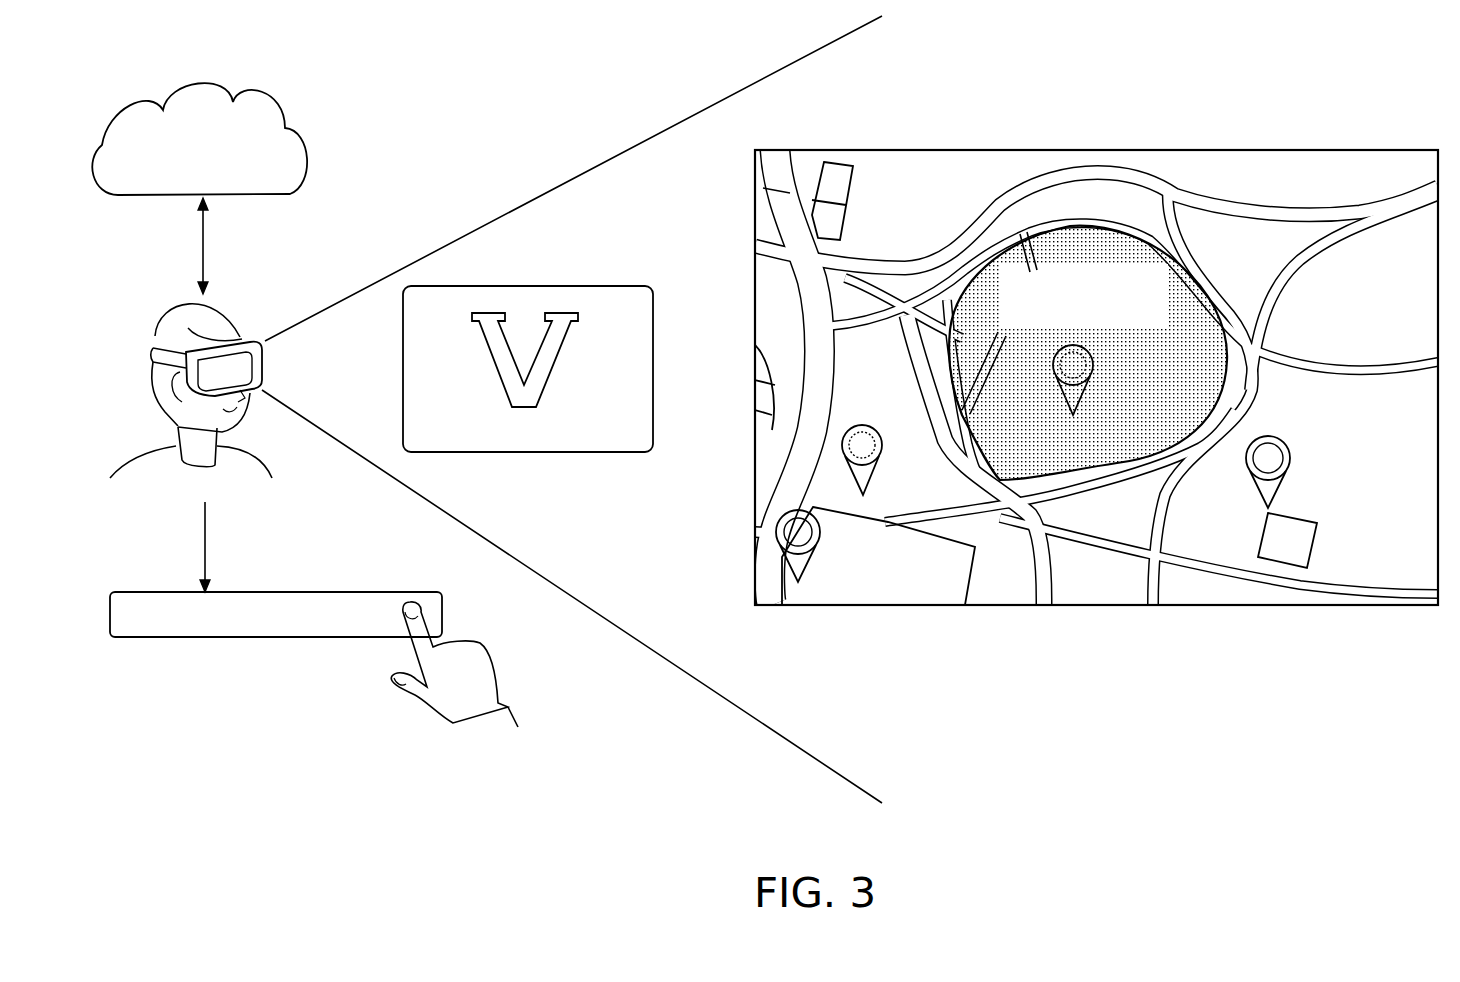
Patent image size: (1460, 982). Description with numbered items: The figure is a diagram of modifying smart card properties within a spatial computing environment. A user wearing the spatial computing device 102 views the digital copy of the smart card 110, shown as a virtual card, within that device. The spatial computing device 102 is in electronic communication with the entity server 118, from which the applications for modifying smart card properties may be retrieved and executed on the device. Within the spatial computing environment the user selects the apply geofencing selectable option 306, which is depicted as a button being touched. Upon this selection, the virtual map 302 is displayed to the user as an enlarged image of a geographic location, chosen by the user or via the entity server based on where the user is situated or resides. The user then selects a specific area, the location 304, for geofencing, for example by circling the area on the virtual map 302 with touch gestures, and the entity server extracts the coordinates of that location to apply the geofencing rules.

The entity server 118 is at (205, 79).
The spatial computing device 102 is at (262, 362).
The smart card 110 is at (507, 286).
The apply geofencing selectable option 306 is at (280, 592).
The virtual map 302 is at (1096, 389).
The location 304 is at (1056, 477).